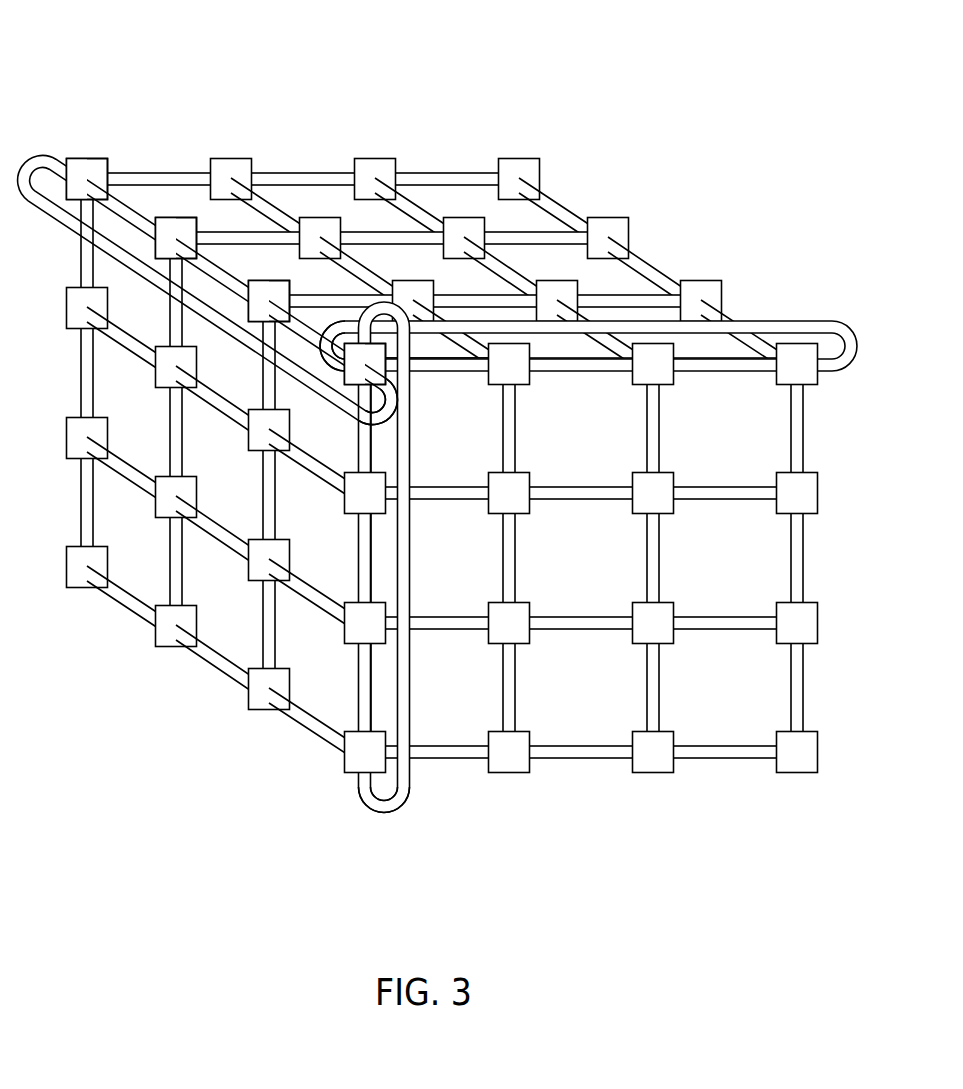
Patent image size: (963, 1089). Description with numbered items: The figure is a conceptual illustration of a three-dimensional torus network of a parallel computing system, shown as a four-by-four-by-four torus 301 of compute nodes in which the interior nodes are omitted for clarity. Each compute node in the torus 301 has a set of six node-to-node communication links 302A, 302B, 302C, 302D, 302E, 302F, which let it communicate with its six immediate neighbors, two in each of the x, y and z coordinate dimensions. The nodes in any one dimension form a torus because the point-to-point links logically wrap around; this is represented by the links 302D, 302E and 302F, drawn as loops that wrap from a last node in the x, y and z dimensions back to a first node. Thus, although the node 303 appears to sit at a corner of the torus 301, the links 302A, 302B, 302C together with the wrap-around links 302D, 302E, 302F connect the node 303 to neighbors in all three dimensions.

The torus 301 is at (437, 439).
The node-to-node communication link 302A is at (432, 370).
The node-to-node communication link 302B is at (371, 451).
The node-to-node communication link 302C is at (304, 318).
The wrap-around communication link 302D is at (817, 321).
The wrap-around communication link 302E is at (382, 813).
The wrap-around communication link 302F is at (41, 153).
The node 303 is at (333, 389).